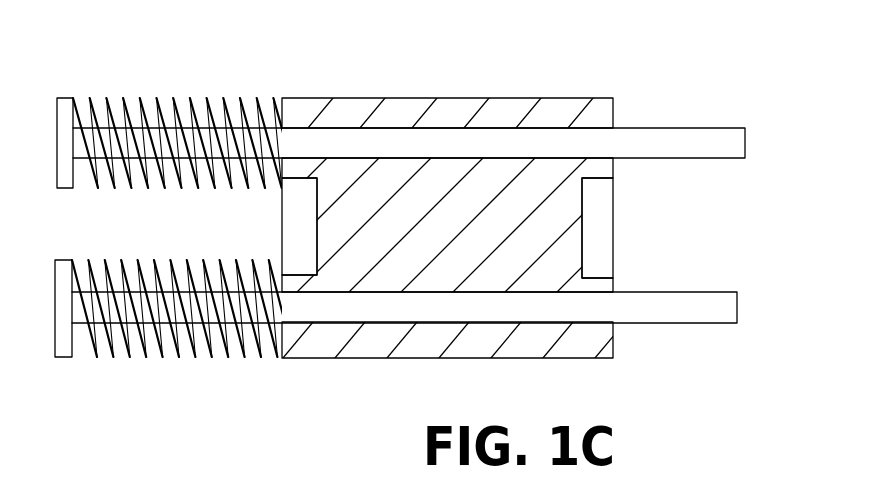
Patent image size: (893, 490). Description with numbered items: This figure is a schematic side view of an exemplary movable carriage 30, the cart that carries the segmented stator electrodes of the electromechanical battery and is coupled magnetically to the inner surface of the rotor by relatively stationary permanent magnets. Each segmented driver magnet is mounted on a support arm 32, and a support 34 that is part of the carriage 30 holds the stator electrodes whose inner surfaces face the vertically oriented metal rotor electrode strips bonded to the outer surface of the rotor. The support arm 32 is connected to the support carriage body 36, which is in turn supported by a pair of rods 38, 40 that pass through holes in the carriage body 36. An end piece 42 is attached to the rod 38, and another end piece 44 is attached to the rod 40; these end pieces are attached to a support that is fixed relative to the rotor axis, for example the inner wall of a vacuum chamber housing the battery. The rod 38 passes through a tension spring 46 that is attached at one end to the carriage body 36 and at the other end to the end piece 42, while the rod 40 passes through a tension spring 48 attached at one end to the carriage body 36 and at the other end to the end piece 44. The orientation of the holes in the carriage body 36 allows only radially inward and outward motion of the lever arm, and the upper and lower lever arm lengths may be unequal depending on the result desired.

The movable carriage 30 is at (586, 61).
The support arm 32 is at (598, 242).
The support 34 is at (295, 218).
The support carriage body 36 is at (406, 98).
The rod 38 is at (698, 128).
The rod 40 is at (697, 323).
The end piece 42 is at (72, 98).
The end piece 44 is at (62, 357).
The tension spring 46 is at (191, 98).
The tension spring 48 is at (194, 357).